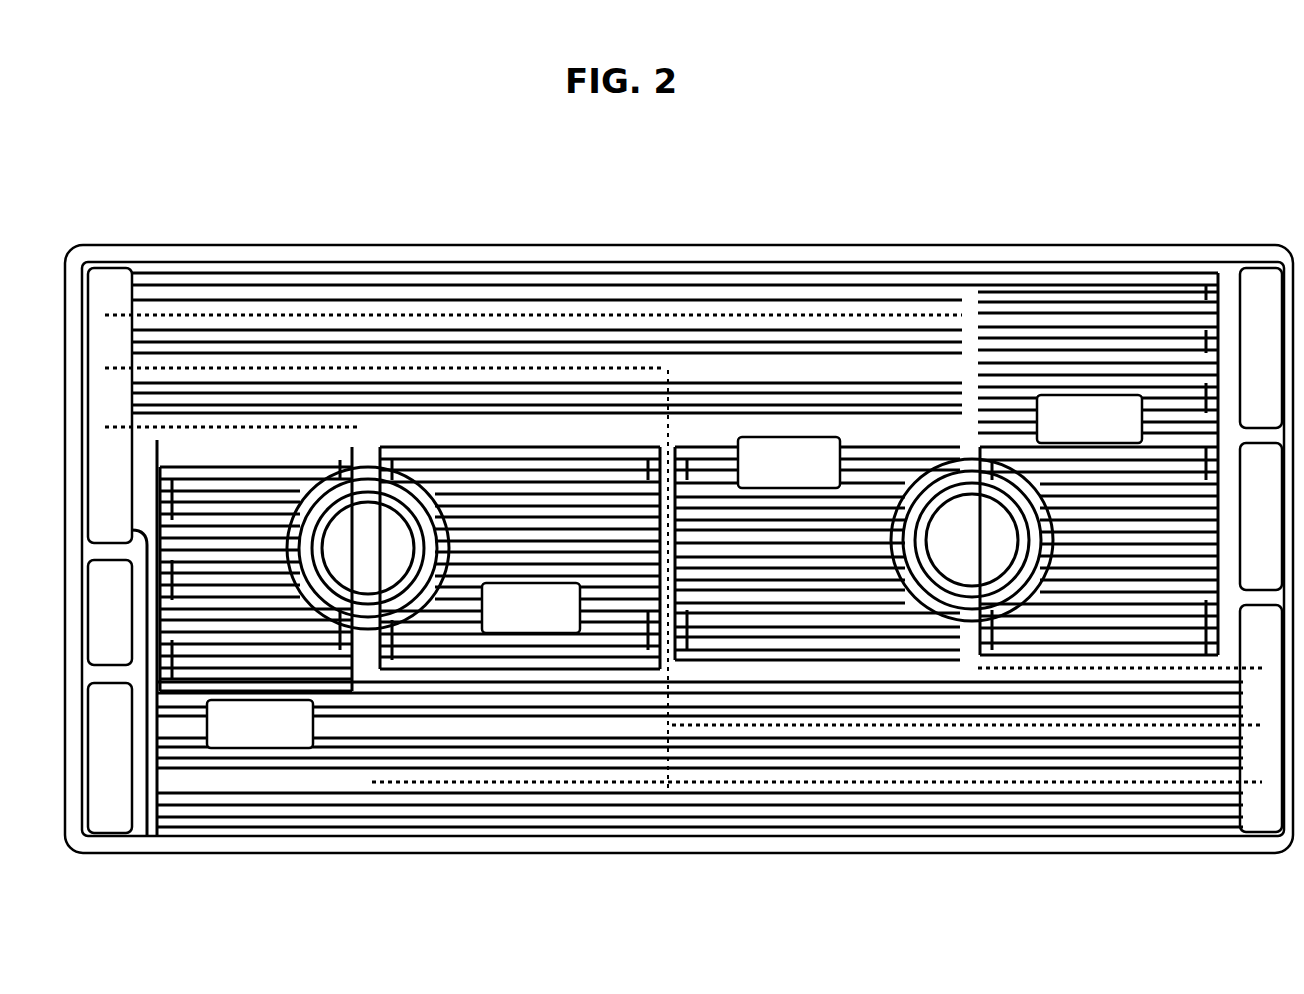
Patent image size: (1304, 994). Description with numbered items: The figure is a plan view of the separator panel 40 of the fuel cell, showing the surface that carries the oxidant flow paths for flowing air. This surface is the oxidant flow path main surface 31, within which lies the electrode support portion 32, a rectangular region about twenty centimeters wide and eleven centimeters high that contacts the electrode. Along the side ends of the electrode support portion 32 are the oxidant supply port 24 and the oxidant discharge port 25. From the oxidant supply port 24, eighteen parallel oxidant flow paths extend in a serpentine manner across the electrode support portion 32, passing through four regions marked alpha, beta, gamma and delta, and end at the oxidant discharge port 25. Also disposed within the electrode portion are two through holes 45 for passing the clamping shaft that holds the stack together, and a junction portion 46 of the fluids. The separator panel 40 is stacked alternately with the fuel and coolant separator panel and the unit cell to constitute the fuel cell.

The oxidant supply port 24 is at (524, 371).
The oxidant discharge port 25 is at (826, 725).
The oxidant flow path main surface 31 is at (293, 846).
The electrode support portion 32 is at (983, 275).
The separator panel 40 is at (448, 855).
The bore for extending a shaft therethrough 45 is at (368, 790).
The junction portion of the fluids 46 is at (968, 315).